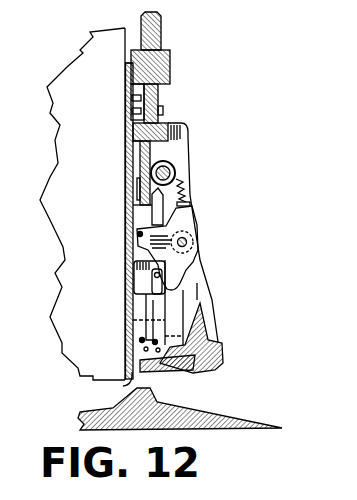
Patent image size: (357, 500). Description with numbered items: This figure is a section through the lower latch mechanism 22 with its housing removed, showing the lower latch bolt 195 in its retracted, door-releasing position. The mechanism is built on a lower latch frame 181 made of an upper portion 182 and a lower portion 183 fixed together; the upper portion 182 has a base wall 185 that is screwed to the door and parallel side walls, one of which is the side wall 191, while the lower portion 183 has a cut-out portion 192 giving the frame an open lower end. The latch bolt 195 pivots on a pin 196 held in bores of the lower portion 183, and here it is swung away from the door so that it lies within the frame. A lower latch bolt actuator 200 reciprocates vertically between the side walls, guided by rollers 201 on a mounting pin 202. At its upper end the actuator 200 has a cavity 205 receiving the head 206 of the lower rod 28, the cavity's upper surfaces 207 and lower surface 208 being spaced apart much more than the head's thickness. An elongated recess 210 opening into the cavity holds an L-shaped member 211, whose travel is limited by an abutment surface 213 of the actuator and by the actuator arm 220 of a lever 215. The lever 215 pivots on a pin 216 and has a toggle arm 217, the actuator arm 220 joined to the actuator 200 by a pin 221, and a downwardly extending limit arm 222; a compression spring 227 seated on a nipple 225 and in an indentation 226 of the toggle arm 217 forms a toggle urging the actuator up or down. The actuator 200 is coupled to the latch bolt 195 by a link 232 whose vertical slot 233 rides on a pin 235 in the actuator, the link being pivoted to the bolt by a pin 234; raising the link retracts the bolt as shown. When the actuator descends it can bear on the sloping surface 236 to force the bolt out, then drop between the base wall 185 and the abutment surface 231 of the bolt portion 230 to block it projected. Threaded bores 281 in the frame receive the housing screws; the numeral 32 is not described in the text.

The lower latch mechanism 22 is at (238, 298).
The lower rod 28 is at (161, 28).
The cam wedge 32 is at (218, 414).
The lower latch frame 181 is at (101, 203).
The upper portion 182 is at (130, 118).
The lower portion 183 is at (224, 357).
The base wall 185 is at (132, 232).
The side wall 191 is at (212, 317).
The cut-out portion 192 is at (130, 354).
The lower latch bolt 195 is at (203, 377).
The pin 196 is at (130, 383).
The lower latch bolt actuator 200 is at (135, 178).
The rollers 201 is at (180, 163).
The mounting pin 202 is at (177, 172).
The cavity 205 is at (138, 142).
The head 206 is at (170, 126).
The upper surfaces 207 is at (128, 127).
The lower surface 208 is at (128, 152).
The elongated recess 210 is at (140, 168).
The L-shaped member 211 is at (132, 217).
The abutment surface 213 is at (140, 192).
The lever 215 is at (197, 269).
The pin 216 is at (188, 243).
The toggle arm 217 is at (190, 226).
The actuator arm 220 is at (140, 245).
The pin 221 is at (138, 237).
The limit arm 222 is at (197, 278).
The nipple 225 is at (182, 184).
The indentation 226 is at (190, 222).
The compression spring 227 is at (187, 199).
The portion 230 is at (142, 318).
The abutment surface 231 is at (138, 342).
The link 232 is at (142, 277).
The vertical slot 233 is at (133, 297).
The pin 234 is at (153, 367).
The pin 235 is at (156, 281).
The sloping surface 236 is at (167, 322).
The threaded bores 281 is at (170, 62).